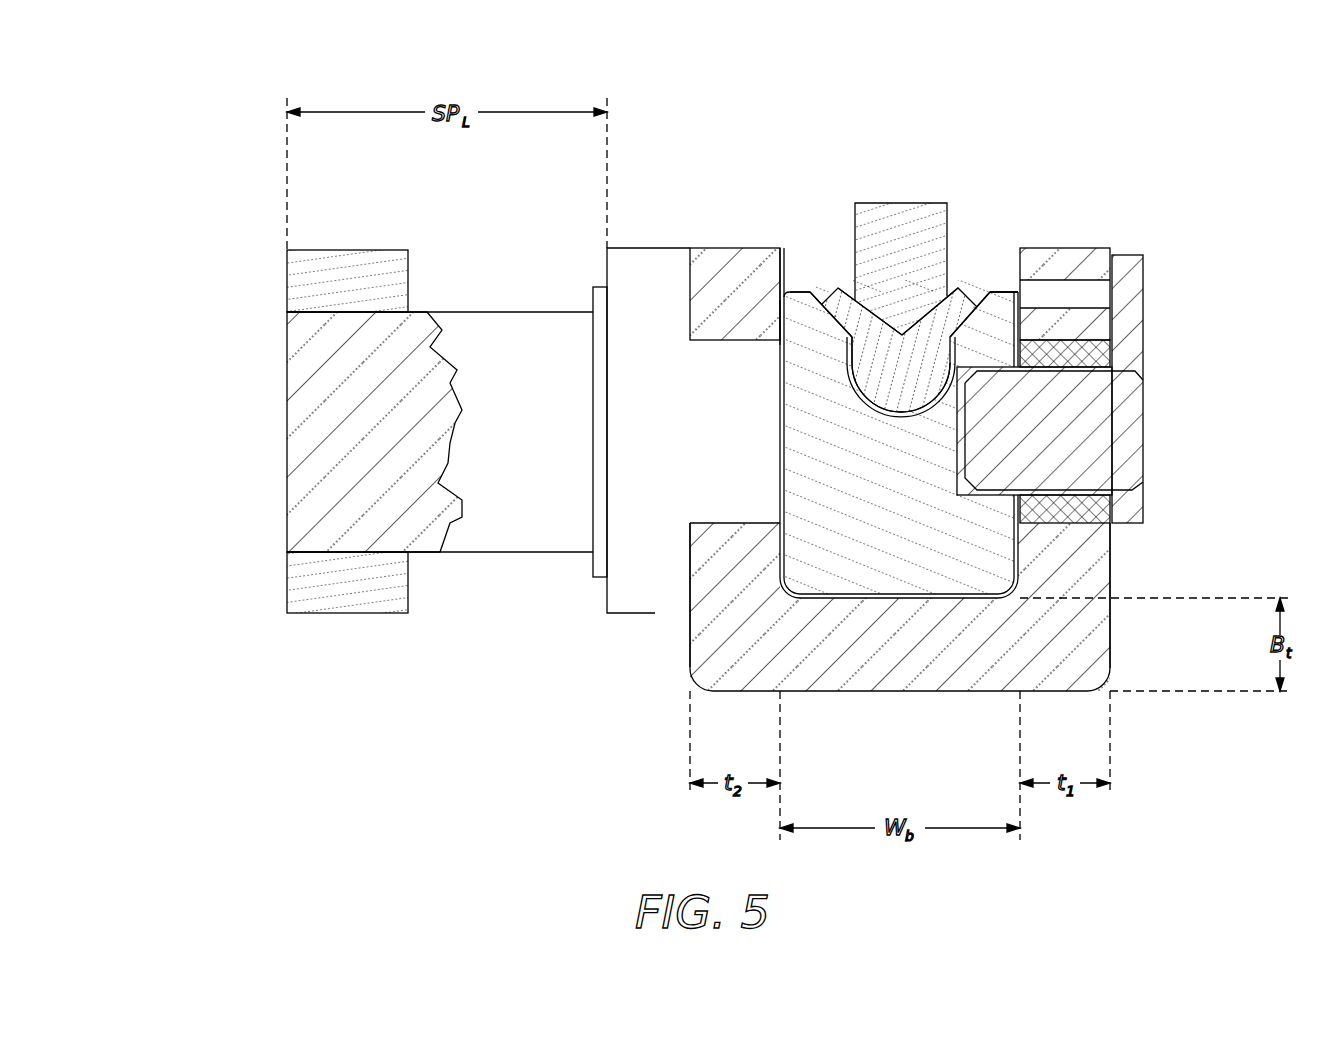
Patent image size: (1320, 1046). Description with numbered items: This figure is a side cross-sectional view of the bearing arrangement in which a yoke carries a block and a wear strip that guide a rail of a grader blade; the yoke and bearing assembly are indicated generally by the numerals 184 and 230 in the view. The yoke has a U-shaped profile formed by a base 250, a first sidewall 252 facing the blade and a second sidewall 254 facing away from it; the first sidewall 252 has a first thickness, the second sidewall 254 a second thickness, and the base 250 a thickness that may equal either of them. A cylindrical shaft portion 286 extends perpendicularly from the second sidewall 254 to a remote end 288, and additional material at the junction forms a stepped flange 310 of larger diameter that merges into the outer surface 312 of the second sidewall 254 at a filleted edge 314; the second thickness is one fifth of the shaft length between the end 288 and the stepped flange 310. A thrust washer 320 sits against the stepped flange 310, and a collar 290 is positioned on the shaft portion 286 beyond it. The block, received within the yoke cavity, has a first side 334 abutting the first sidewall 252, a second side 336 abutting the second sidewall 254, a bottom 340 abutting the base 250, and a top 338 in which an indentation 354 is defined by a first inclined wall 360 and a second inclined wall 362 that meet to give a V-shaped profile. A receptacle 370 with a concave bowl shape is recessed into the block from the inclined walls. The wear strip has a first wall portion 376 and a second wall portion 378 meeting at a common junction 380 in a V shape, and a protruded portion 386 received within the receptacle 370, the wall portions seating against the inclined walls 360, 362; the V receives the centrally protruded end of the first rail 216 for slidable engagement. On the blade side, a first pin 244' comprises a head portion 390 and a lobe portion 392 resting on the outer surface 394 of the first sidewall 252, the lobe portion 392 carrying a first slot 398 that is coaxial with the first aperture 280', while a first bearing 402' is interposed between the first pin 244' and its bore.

The clamp assembly 184 is at (128, 122).
The bus bar clamp 230 is at (192, 238).
The end 288 is at (287, 370).
The collar 290 is at (335, 613).
The shaft portion 286 is at (495, 553).
The thrust washer 320 is at (593, 563).
The stepped flange 310 is at (607, 268).
The second sidewall 254 is at (690, 298).
The outer surface 312 is at (690, 575).
The filleted edge 314 is at (655, 614).
The base 250 is at (840, 692).
The bottom 340 is at (920, 598).
The first side 334 is at (1022, 550).
The second side 336 is at (782, 322).
The top 338 is at (793, 292).
The second inclined wall 362 is at (817, 297).
The first inclined wall 360 is at (972, 303).
The indentation 354 is at (1003, 292).
The protruded portion 386 is at (852, 365).
The receptacle 370 is at (853, 372).
The common junction 380 is at (904, 316).
The second wall portion 378 is at (872, 305).
The first wall portion 376 is at (930, 300).
The first rail 216 is at (947, 233).
The first aperture 280' is at (1113, 276).
The first slot 398 is at (1122, 280).
The first sidewall 252 is at (1143, 324).
The lobe portion 392 is at (1143, 338).
The head portion 390 is at (1143, 423).
The first pin 244' is at (1096, 389).
The first bearing 402' is at (1136, 518).
The outer surface 394 is at (1113, 575).